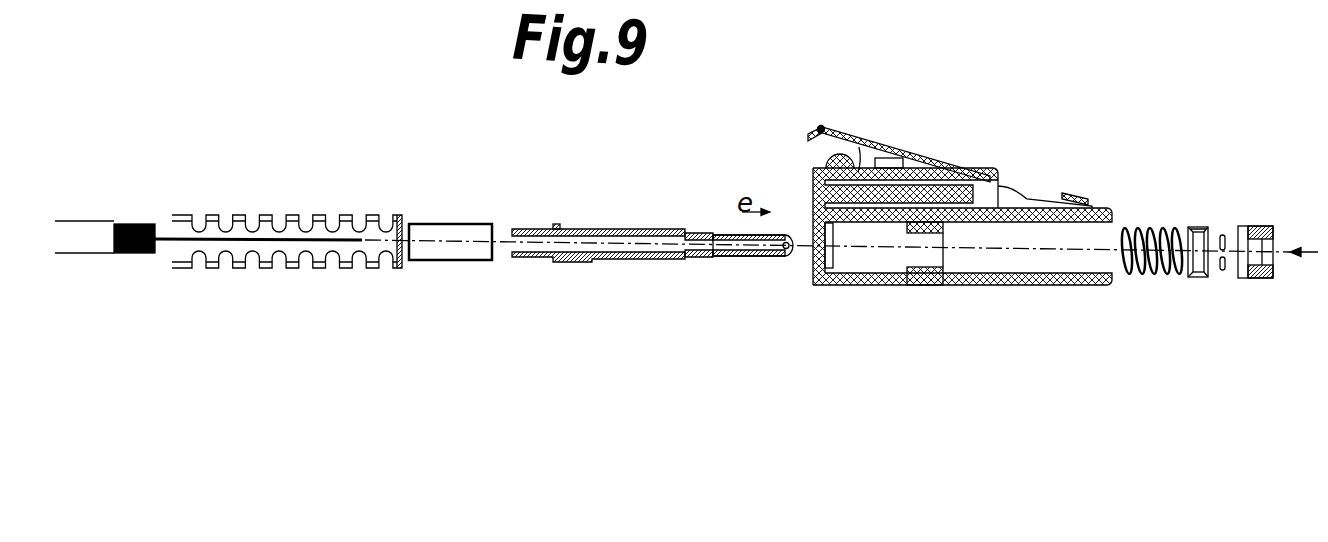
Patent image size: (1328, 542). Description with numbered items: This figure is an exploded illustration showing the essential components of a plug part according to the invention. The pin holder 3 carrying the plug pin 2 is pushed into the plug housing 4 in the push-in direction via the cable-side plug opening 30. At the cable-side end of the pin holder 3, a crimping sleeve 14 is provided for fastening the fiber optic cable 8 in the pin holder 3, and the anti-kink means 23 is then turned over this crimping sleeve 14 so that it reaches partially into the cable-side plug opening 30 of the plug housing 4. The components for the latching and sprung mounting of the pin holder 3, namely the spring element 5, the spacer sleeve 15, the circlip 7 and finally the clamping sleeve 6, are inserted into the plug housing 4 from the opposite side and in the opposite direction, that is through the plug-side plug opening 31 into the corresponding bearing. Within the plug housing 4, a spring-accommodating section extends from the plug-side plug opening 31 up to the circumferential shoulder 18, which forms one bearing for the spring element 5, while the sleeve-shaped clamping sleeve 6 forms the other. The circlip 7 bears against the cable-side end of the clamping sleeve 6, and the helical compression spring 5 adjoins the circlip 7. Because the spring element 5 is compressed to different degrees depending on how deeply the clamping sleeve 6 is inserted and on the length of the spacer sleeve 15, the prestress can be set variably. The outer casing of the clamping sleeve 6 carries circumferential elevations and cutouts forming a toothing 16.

The fiber optic cable 8 is at (86, 212).
The anti-kink means 23 is at (286, 209).
The crimping sleeve 14 is at (444, 219).
The pin holder 3 is at (619, 227).
The plug pin 2 is at (752, 258).
The plug housing 4 is at (960, 240).
The cable-side plug opening 30 is at (815, 262).
The shoulder 18 is at (945, 230).
The plug-side plug opening 31 is at (1104, 266).
The spring element 5 is at (1143, 285).
The spacer sleeve 15 is at (1197, 287).
The circlip 7 is at (1223, 232).
The clamping sleeve 6 is at (1271, 269).
The toothing 16 is at (1267, 227).